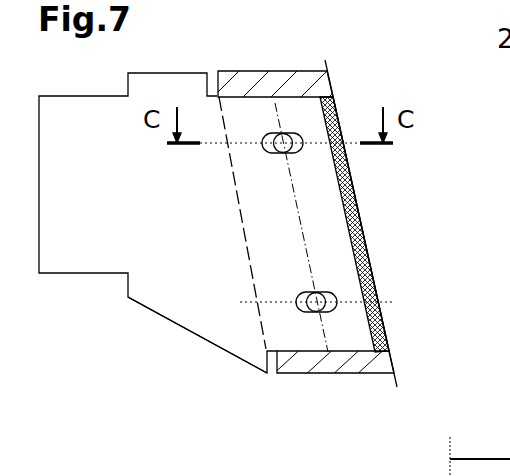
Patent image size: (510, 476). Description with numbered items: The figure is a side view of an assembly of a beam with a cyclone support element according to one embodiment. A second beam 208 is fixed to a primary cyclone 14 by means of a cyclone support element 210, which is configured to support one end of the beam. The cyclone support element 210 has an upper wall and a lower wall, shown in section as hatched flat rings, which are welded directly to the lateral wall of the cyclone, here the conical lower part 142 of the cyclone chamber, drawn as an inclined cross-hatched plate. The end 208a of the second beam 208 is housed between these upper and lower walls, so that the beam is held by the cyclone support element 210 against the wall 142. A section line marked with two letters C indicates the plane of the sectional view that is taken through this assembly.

The primary cyclone 14 is at (366, 202).
The conical lower part of the cyclone chamber 142 is at (371, 262).
The second beam 208 is at (158, 318).
The first end of second beam 208a is at (352, 329).
The cyclone support element 210 is at (280, 381).